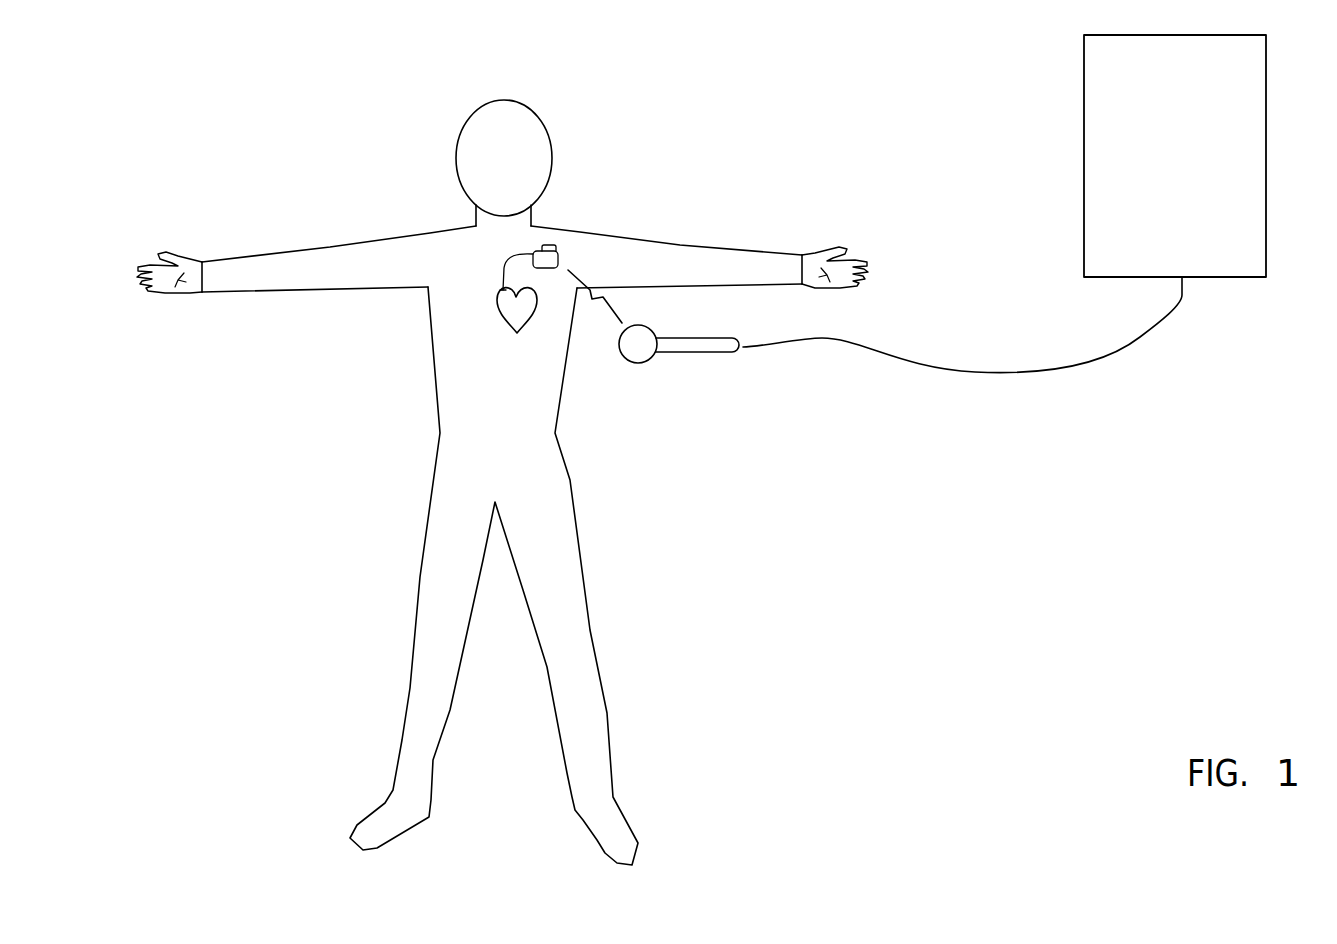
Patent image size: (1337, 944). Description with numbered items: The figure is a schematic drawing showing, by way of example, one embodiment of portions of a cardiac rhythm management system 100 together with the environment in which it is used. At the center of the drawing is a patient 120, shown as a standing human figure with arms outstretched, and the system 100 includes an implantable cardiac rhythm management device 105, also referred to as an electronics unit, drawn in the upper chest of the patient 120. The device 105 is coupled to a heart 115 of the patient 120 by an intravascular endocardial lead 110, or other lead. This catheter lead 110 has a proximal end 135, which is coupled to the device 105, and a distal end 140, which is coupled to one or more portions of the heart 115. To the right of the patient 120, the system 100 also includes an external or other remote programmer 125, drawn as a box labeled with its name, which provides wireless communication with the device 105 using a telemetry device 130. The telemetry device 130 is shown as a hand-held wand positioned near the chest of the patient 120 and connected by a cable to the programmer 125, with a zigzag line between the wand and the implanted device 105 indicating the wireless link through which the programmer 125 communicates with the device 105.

The cardiac rhythm management system 100 is at (1010, 562).
The implantable cardiac rhythm management device 105 is at (559, 256).
The intravascular endocardial lead 110 is at (503, 263).
The heart 115 is at (503, 323).
The patient 120 is at (437, 396).
The programmer 125 is at (1266, 203).
The telemetry device 130 is at (637, 363).
The proximal end 135 is at (542, 247).
The distal end 140 is at (500, 290).